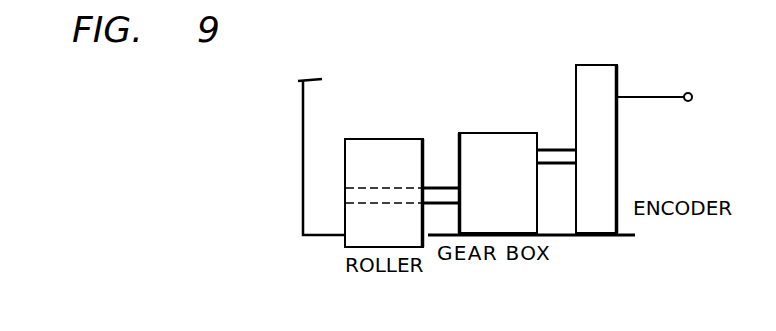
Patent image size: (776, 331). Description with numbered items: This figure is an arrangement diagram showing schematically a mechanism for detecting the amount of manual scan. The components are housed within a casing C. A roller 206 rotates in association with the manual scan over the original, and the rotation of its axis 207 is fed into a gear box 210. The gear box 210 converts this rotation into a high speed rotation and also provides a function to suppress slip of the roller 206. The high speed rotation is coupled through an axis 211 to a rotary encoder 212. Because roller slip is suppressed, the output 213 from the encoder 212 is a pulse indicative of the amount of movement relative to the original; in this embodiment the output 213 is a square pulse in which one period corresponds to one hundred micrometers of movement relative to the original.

The casing C is at (304, 115).
The roller 206 is at (384, 148).
The axis of the roller 207 is at (436, 190).
The gear box 210 is at (500, 137).
The axis 211 is at (557, 155).
The rotary encoder 212 is at (598, 70).
The output 213 is at (653, 98).